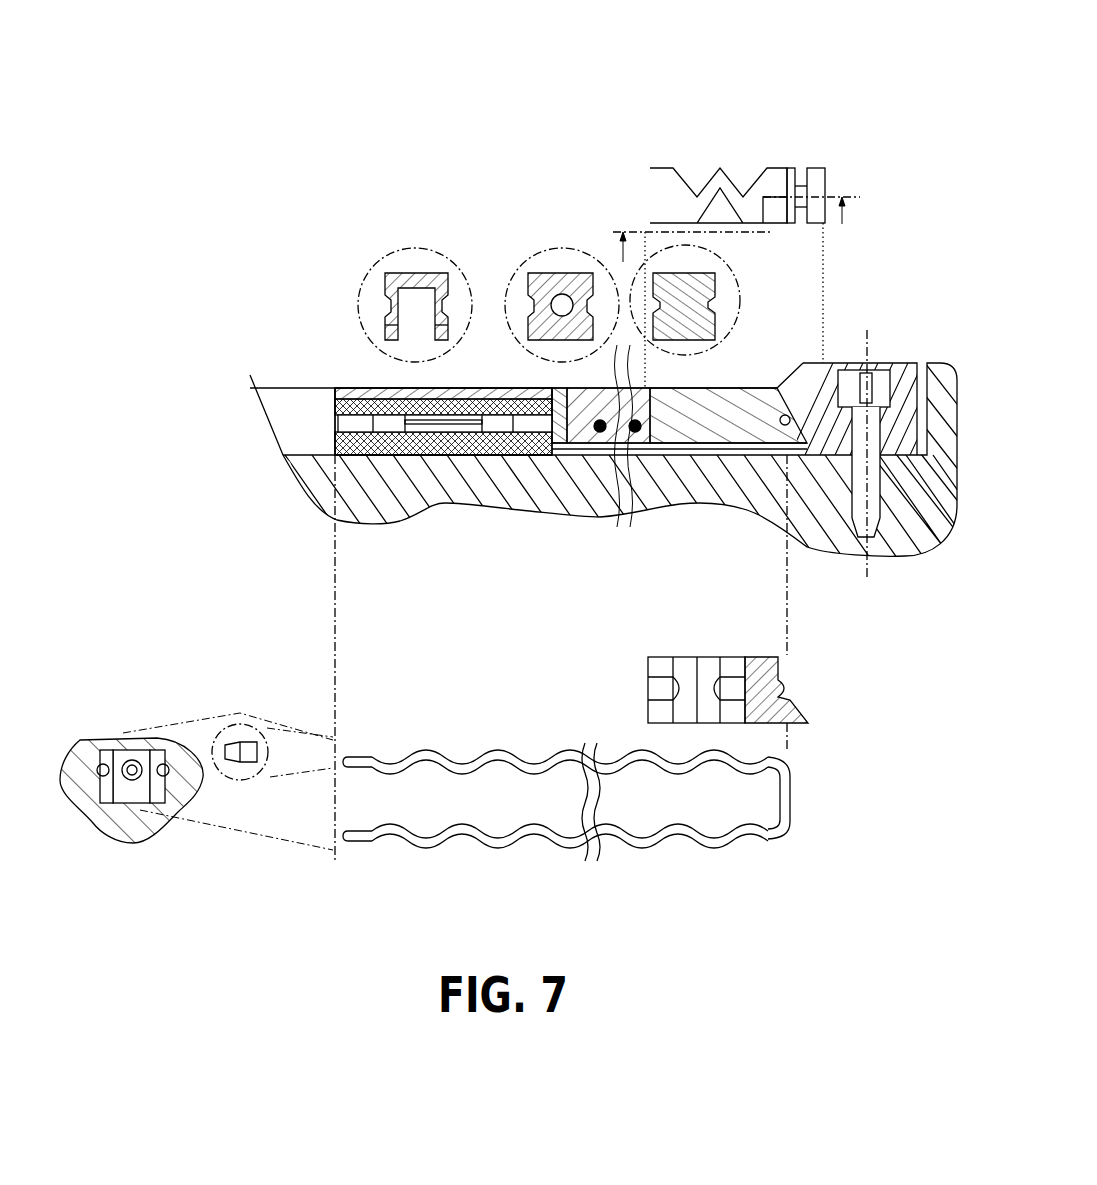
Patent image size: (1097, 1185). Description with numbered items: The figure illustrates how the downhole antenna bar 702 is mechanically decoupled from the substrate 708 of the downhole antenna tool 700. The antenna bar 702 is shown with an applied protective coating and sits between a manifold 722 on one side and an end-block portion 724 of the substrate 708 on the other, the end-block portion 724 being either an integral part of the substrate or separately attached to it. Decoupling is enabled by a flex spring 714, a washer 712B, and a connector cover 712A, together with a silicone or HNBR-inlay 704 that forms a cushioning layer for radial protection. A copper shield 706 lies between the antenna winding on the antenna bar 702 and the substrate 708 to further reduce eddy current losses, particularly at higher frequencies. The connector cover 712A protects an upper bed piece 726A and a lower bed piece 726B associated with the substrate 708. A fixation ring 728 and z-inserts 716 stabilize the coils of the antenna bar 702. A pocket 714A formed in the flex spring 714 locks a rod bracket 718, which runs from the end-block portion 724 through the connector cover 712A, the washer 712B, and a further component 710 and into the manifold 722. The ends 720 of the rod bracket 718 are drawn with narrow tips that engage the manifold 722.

The downhole antenna tool 700 is at (739, 110).
The downhole antenna bar 702 is at (537, 450).
The HNBR-inlay 704 is at (580, 452).
The copper shield 706 is at (562, 450).
The substrate 708 is at (330, 497).
The component 710 is at (740, 298).
The connector cover 712A is at (407, 247).
The washer 712B is at (552, 243).
The flex spring 714 is at (690, 453).
The pocket 714A is at (787, 688).
The z-inserts 716 is at (700, 418).
The rod bracket 718 is at (747, 847).
The ends of the rod bracket 720 is at (185, 723).
The manifold 722 is at (297, 412).
The end-block portion 724 is at (897, 363).
The upper bed piece 726A is at (395, 392).
The lower bed piece 726B is at (386, 453).
The fixation ring 728 is at (590, 385).